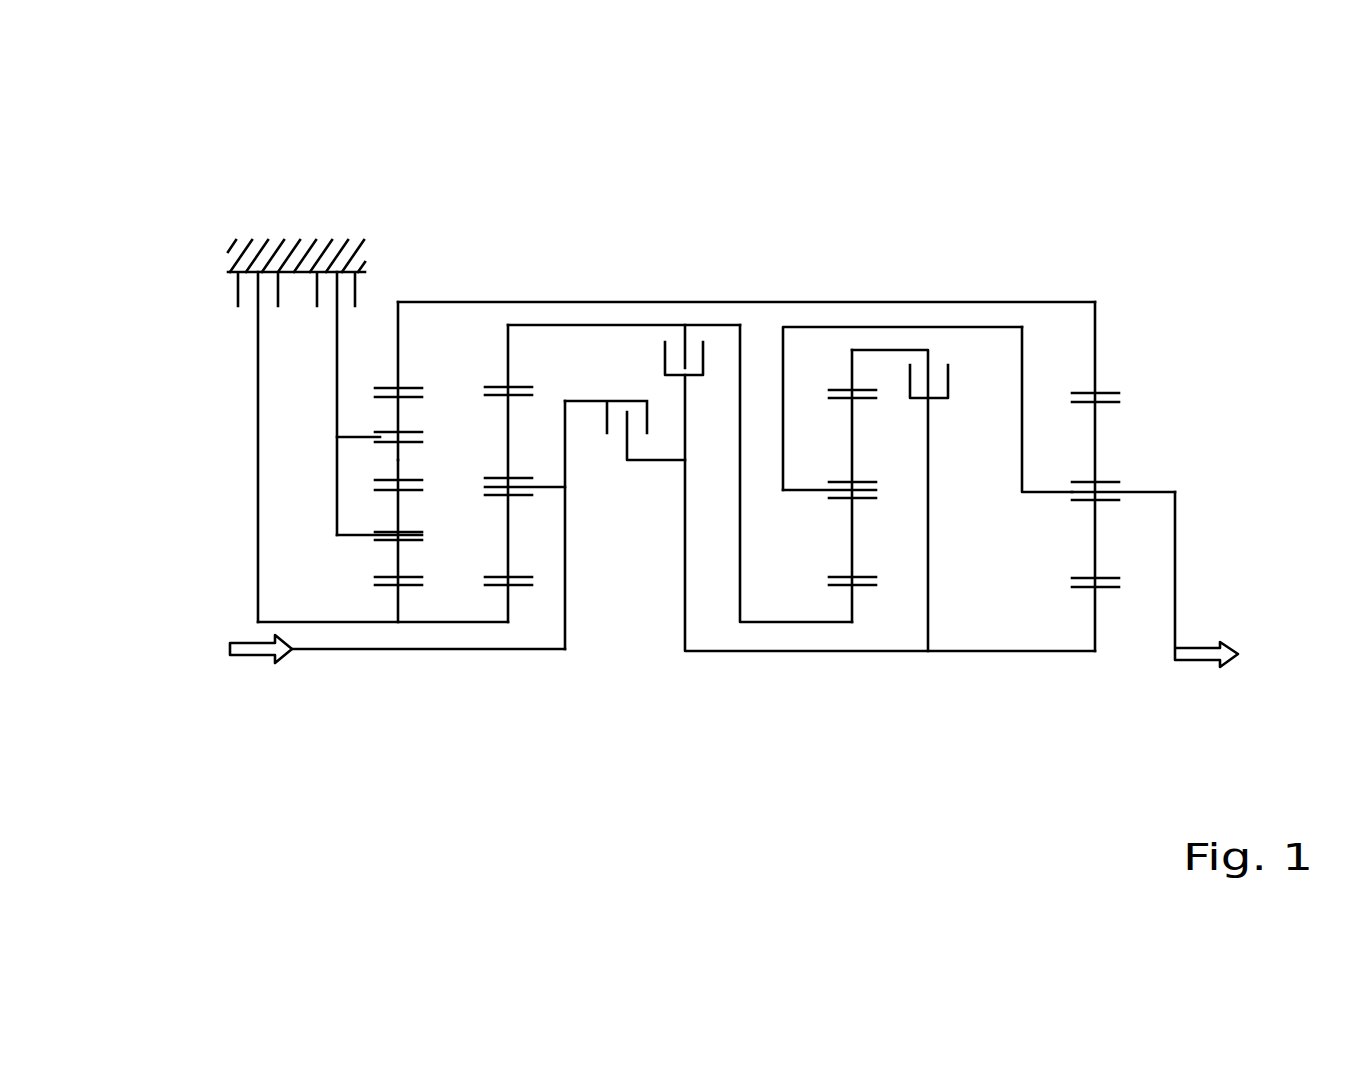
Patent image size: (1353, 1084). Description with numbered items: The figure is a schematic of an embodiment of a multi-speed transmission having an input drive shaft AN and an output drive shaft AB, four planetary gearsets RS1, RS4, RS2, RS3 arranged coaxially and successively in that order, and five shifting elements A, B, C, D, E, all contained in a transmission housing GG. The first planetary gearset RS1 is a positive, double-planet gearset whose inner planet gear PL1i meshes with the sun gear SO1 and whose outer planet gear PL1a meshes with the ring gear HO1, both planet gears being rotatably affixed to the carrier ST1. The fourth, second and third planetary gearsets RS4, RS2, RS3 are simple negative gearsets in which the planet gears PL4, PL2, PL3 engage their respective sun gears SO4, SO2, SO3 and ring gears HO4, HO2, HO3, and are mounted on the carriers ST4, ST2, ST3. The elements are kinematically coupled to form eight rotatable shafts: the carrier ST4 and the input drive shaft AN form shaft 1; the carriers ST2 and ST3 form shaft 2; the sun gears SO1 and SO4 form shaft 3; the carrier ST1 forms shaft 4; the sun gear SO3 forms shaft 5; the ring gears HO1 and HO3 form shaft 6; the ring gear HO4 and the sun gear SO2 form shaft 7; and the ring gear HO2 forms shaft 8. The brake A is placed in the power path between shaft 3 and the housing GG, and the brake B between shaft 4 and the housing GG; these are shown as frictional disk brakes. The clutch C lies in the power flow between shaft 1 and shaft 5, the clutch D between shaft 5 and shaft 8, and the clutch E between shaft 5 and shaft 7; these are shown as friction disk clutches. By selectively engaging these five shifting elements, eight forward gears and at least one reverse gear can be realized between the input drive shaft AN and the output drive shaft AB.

The transmission housing GG is at (284, 214).
The ring gear of the first planetary gearset HO1 is at (348, 259).
The outer planet gear PL1a is at (387, 306).
The inner planet gear PL1i is at (225, 553).
The planet gear of the fourth planetary gearset PL4 is at (467, 372).
The ring gear of the fourth planetary gearset HO4 is at (612, 258).
The carrier of the fourth planetary gearset ST4 is at (548, 304).
The clutch C is at (625, 291).
The clutch E is at (703, 248).
The shaft 6 is at (746, 212).
The planet gear of the second planetary gearset PL2 is at (856, 372).
The ring gear of the second planetary gearset HO2 is at (902, 306).
The shaft 8 is at (935, 386).
The shaft 2 is at (1048, 307).
The ring gear of the third planetary gearset HO3 is at (1125, 262).
The planet gear of the third planetary gearset PL3 is at (1176, 386).
The carrier of the third planetary gearset ST3 is at (1201, 307).
The brake A is at (166, 447).
The brake B is at (206, 403).
The shaft 4 is at (227, 434).
The carrier of the first planetary gearset ST1 is at (239, 482).
The first planetary gearset RS1 is at (239, 560).
The input drive shaft AN is at (397, 713).
The sun gear of the first planetary gearset SO1 is at (363, 684).
The shaft 3 is at (383, 706).
The fourth planetary gearset RS4 is at (497, 643).
The sun gear of the fourth planetary gearset SO4 is at (536, 684).
The shaft 1 is at (595, 596).
The shaft 7 is at (752, 558).
The carrier of the second planetary gearset ST2 is at (782, 636).
The sun gear of the second planetary gearset SO2 is at (821, 684).
The second planetary gearset RS2 is at (868, 644).
The shaft 5 is at (890, 583).
The clutch D is at (971, 578).
The sun gear of the third planetary gearset SO3 is at (1099, 684).
The third planetary gearset RS3 is at (1138, 645).
The output drive shaft AB is at (1225, 641).